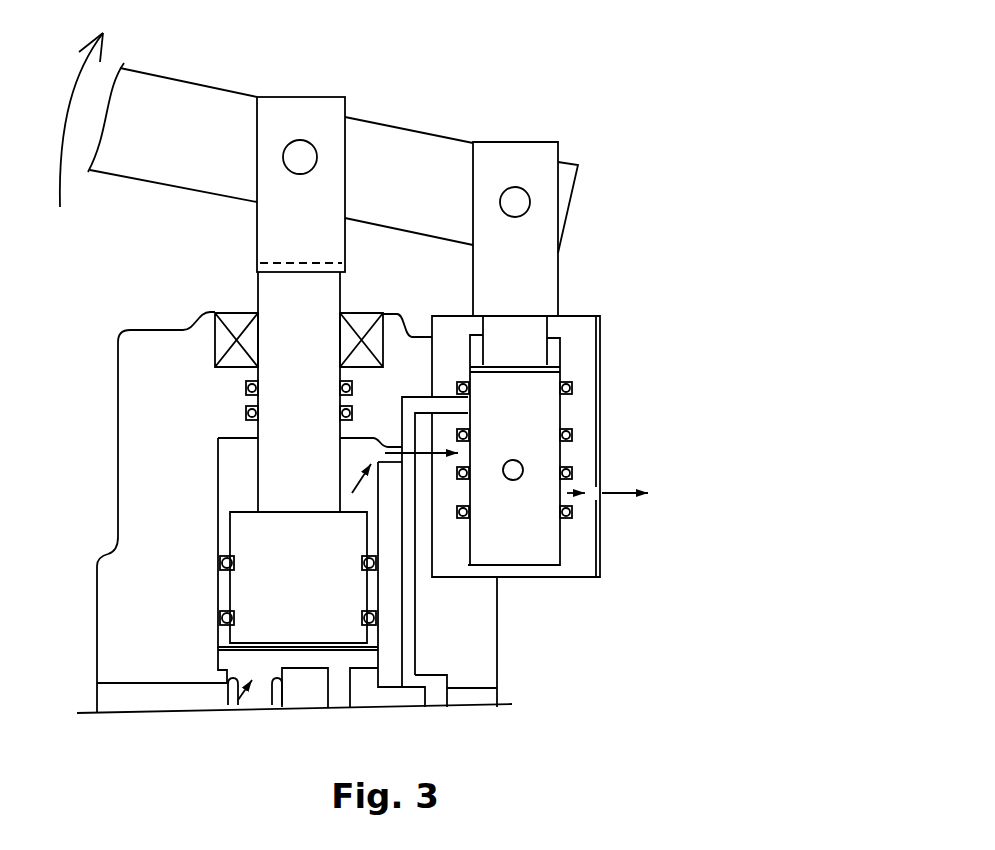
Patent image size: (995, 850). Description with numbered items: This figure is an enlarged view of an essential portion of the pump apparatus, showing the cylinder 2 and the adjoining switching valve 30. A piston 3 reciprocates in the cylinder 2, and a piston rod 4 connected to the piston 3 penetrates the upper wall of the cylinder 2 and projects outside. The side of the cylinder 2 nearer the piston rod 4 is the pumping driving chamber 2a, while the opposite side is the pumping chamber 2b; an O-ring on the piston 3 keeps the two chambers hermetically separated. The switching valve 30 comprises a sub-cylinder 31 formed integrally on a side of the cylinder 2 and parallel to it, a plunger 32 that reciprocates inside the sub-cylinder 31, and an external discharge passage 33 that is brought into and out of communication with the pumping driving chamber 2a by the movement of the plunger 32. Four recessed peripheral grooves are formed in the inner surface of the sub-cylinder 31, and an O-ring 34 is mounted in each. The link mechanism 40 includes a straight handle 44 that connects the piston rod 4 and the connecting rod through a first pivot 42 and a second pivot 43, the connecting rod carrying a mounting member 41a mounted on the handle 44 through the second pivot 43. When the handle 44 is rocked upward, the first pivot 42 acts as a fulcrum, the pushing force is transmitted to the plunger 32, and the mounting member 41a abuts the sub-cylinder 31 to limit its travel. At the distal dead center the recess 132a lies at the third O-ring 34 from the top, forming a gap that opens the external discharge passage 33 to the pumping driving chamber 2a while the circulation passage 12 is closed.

The cylinder 2 is at (117, 355).
The pumping driving chamber 2a is at (230, 480).
The pumping chamber 2b is at (228, 660).
The piston 3 is at (242, 538).
The piston rod 4 is at (278, 295).
The circulation passage 12 is at (421, 462).
The switching valve 30 is at (664, 350).
The sub-cylinder 31 is at (590, 335).
The plunger 32 is at (552, 562).
The external discharge passage 33 is at (596, 505).
The O-ring 34 is at (573, 435).
The link mechanism 40 is at (483, 91).
The mounting member 41a is at (543, 275).
The first pivot 42 is at (305, 142).
The second pivot 43 is at (525, 187).
The handle 44 is at (418, 130).
The recess 132a is at (565, 462).